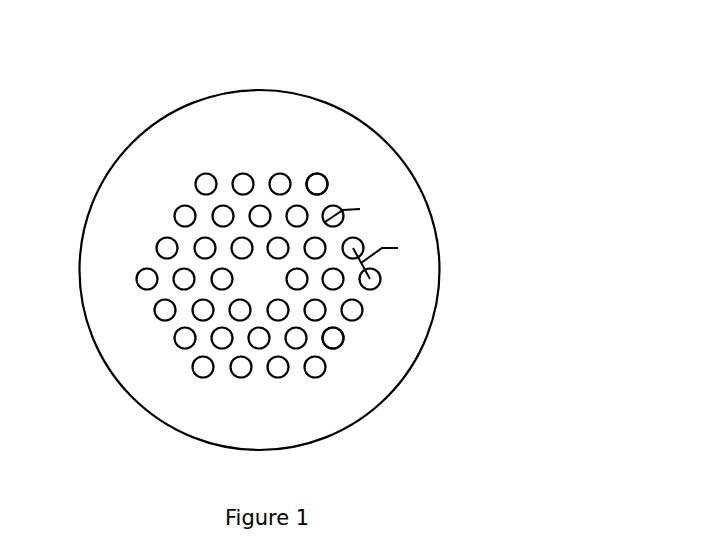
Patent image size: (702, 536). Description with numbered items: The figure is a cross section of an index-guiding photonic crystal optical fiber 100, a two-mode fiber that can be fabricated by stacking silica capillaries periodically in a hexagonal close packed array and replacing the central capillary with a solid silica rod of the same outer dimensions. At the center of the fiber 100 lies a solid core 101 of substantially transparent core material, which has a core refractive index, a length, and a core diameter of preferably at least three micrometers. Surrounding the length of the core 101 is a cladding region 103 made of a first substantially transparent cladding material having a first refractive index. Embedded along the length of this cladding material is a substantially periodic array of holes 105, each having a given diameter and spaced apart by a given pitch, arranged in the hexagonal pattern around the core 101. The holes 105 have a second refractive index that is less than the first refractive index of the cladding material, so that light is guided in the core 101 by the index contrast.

The index-guiding photonic crystal optical fiber 100 is at (487, 211).
The solid core 101 is at (245, 285).
The cladding region 103 is at (264, 150).
The holes 105 is at (324, 177).